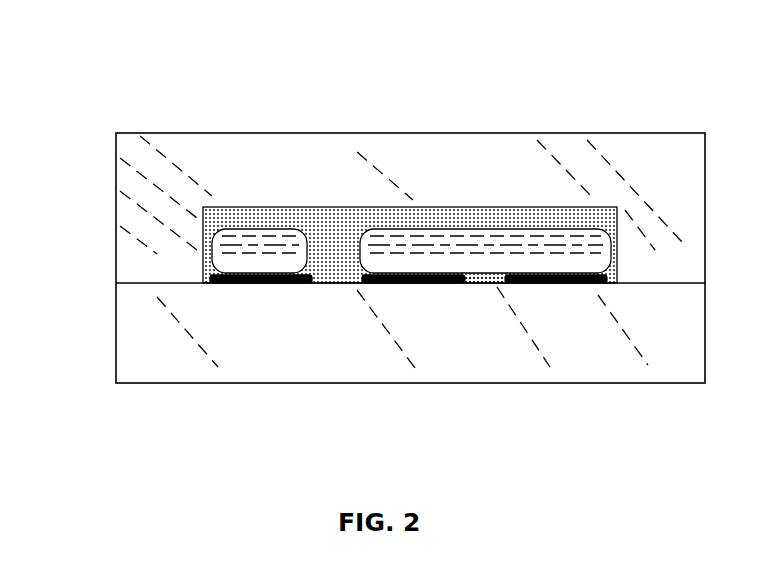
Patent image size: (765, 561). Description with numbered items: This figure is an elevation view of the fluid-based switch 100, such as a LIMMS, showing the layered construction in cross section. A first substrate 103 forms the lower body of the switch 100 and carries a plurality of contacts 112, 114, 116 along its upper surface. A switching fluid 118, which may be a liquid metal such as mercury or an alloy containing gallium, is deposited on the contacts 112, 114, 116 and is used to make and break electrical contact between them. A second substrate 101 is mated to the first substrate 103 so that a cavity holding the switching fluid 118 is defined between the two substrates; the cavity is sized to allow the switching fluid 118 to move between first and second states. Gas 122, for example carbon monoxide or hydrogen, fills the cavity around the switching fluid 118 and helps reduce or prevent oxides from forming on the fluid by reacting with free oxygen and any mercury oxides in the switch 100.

The switch 100 is at (93, 272).
The second substrate 101 is at (676, 162).
The first substrate 103 is at (680, 309).
The contact 112 is at (268, 283).
The contact 114 is at (432, 283).
The contact 116 is at (565, 283).
The switching fluid 118 is at (400, 243).
The gas 122 is at (483, 277).